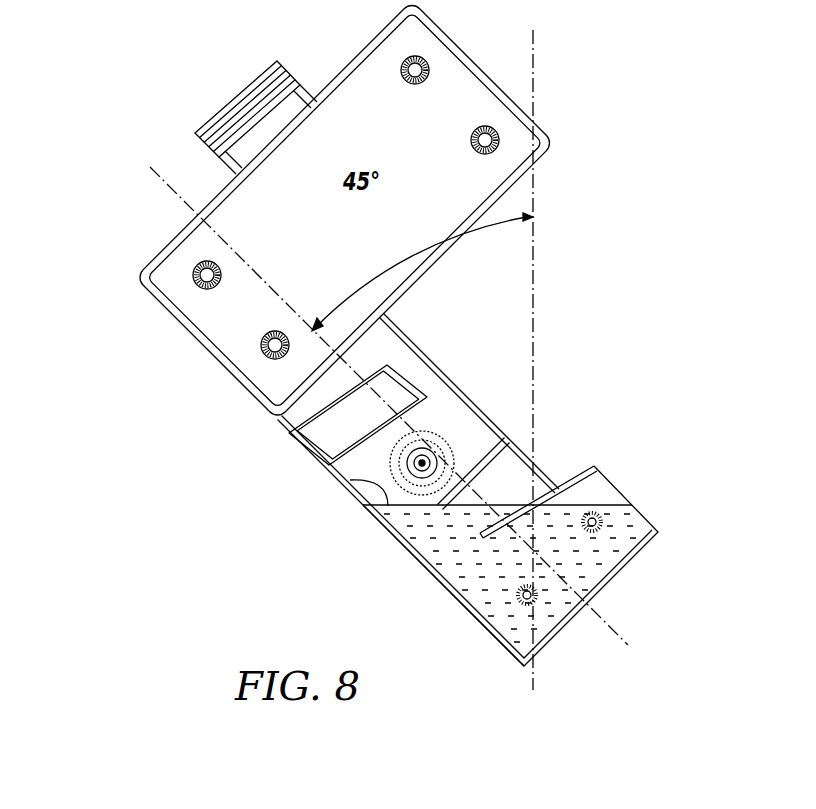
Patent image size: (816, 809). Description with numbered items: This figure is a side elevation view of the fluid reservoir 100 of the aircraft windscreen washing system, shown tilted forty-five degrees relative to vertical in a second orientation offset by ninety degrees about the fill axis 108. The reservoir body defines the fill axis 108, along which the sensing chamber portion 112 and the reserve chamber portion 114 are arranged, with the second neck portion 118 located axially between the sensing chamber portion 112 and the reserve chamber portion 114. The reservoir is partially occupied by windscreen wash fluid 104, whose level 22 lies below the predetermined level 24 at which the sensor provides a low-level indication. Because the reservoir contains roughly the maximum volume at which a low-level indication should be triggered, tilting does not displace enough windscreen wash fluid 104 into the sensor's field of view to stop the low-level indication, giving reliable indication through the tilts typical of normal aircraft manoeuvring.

The fluid reservoir 100 is at (328, 538).
The fill axis 108 is at (241, 260).
The sensing chamber portion 112 is at (452, 432).
The reserve chamber portion 114 is at (622, 497).
The windscreen wash fluid 104 is at (547, 612).
The second neck portion 118 is at (425, 566).
The predetermined level 24 is at (425, 455).
The level 22 is at (357, 473).